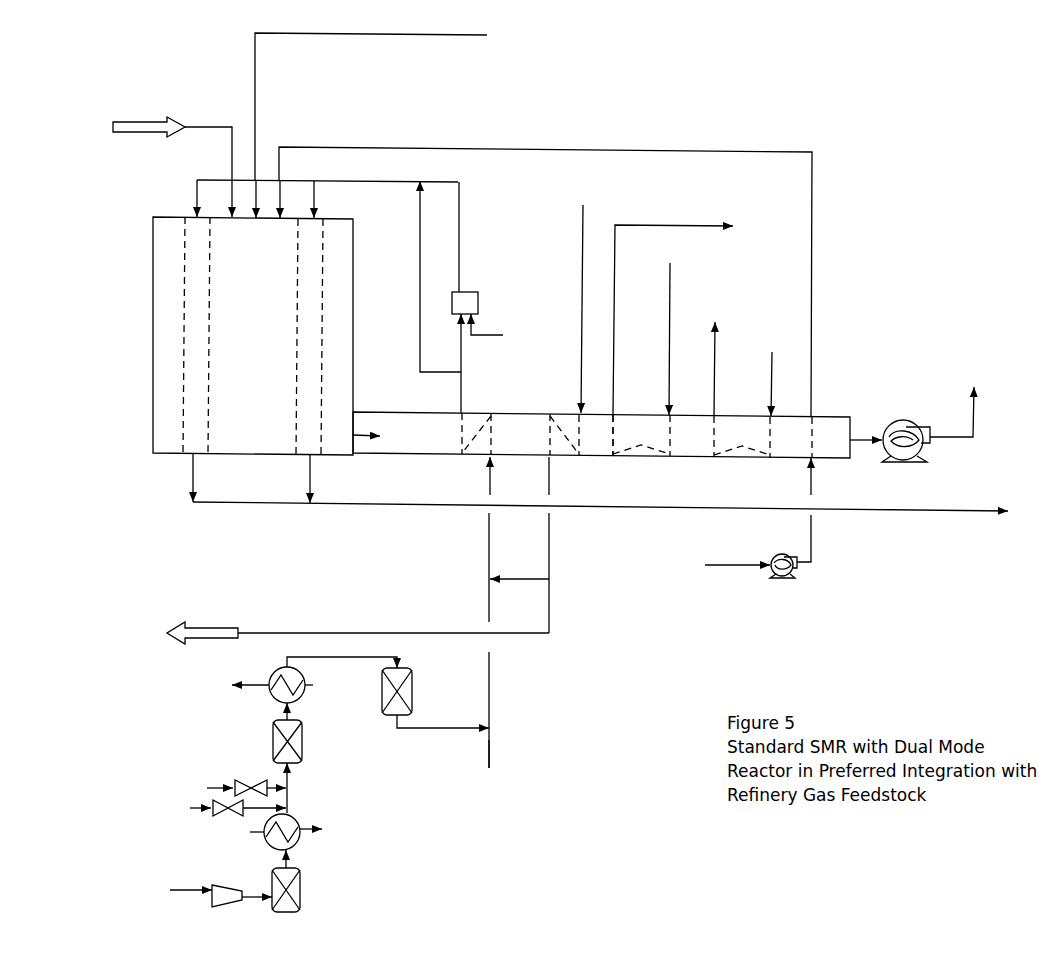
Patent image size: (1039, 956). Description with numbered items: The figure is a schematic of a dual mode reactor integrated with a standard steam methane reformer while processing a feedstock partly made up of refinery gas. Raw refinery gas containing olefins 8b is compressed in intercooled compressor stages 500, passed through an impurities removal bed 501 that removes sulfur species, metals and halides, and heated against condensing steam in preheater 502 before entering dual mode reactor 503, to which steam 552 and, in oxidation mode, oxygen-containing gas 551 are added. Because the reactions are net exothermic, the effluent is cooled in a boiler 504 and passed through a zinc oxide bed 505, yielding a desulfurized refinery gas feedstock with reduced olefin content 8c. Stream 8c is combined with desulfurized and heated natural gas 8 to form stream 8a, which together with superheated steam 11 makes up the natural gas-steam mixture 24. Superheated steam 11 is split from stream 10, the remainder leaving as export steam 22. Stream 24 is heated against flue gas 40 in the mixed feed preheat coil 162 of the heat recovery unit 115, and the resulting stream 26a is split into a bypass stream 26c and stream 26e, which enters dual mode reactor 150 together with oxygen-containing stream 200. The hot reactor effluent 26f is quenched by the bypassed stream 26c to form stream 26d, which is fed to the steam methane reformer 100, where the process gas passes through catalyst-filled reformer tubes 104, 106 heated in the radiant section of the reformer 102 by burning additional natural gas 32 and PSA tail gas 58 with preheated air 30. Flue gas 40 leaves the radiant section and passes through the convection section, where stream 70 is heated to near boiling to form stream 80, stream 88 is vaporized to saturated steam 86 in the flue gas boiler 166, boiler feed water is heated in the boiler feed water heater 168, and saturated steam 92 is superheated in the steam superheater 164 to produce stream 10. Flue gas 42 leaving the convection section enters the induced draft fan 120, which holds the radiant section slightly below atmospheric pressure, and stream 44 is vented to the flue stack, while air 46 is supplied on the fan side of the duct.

The PSA tail gas 58 is at (371, 95).
The additional natural gas 32 is at (168, 133).
The preheated air 30 is at (545, 274).
The stream 26d is at (327, 199).
The reactor effluent 26f is at (473, 237).
The bypassed stream 26c is at (419, 276).
The mixed feed preheater effluent 26a is at (473, 392).
The dual mode reactor feed stream 26e is at (476, 343).
The dual mode reactor 150 is at (465, 303).
The oxygen-containing stream 200 is at (487, 324).
The radiant section of the reformer 102 is at (253, 336).
The reformer tubes 104 is at (200, 370).
The reformer tubes 106 is at (297, 430).
The steam methane reformer 100 is at (600, 482).
The heat recovery unit 115 is at (601, 450).
The flue gas 40 is at (366, 427).
The mixed feed preheat coil 162 is at (468, 449).
The steam superheater 164 is at (564, 449).
The flue gas boiler 166 is at (618, 450).
The boiler feed water heater 168 is at (742, 450).
The saturated steam 92 is at (571, 309).
The saturated steam 86 is at (673, 310).
The stream 88 is at (679, 339).
The stream 80 is at (723, 369).
The stream 70 is at (759, 384).
The flue gas 42 is at (866, 427).
The induced draft fan 120 is at (904, 454).
The stream 44 is at (952, 412).
The combustion air blower 46 is at (758, 529).
The natural gas-steam mixture 24 is at (473, 539).
The superheated steam 10 is at (558, 545).
The superheated steam 11 is at (519, 566).
The export steam 22 is at (352, 617).
The combined feed stream 8a is at (498, 710).
The desulfurized feed stream 8 is at (498, 754).
The refinery gas feedstock 8c is at (443, 732).
The raw refinery gas 8b is at (173, 889).
The zinc oxide bed 505 is at (365, 686).
The boiler 504 is at (245, 685).
The dual mode reactor 503 is at (225, 758).
The oxygen-containing gas 551 is at (214, 786).
The steam 552 is at (211, 810).
The preheater 502 is at (271, 841).
The impurities removal bed 501 is at (339, 890).
The intercooled compressor stages 500 is at (242, 905).